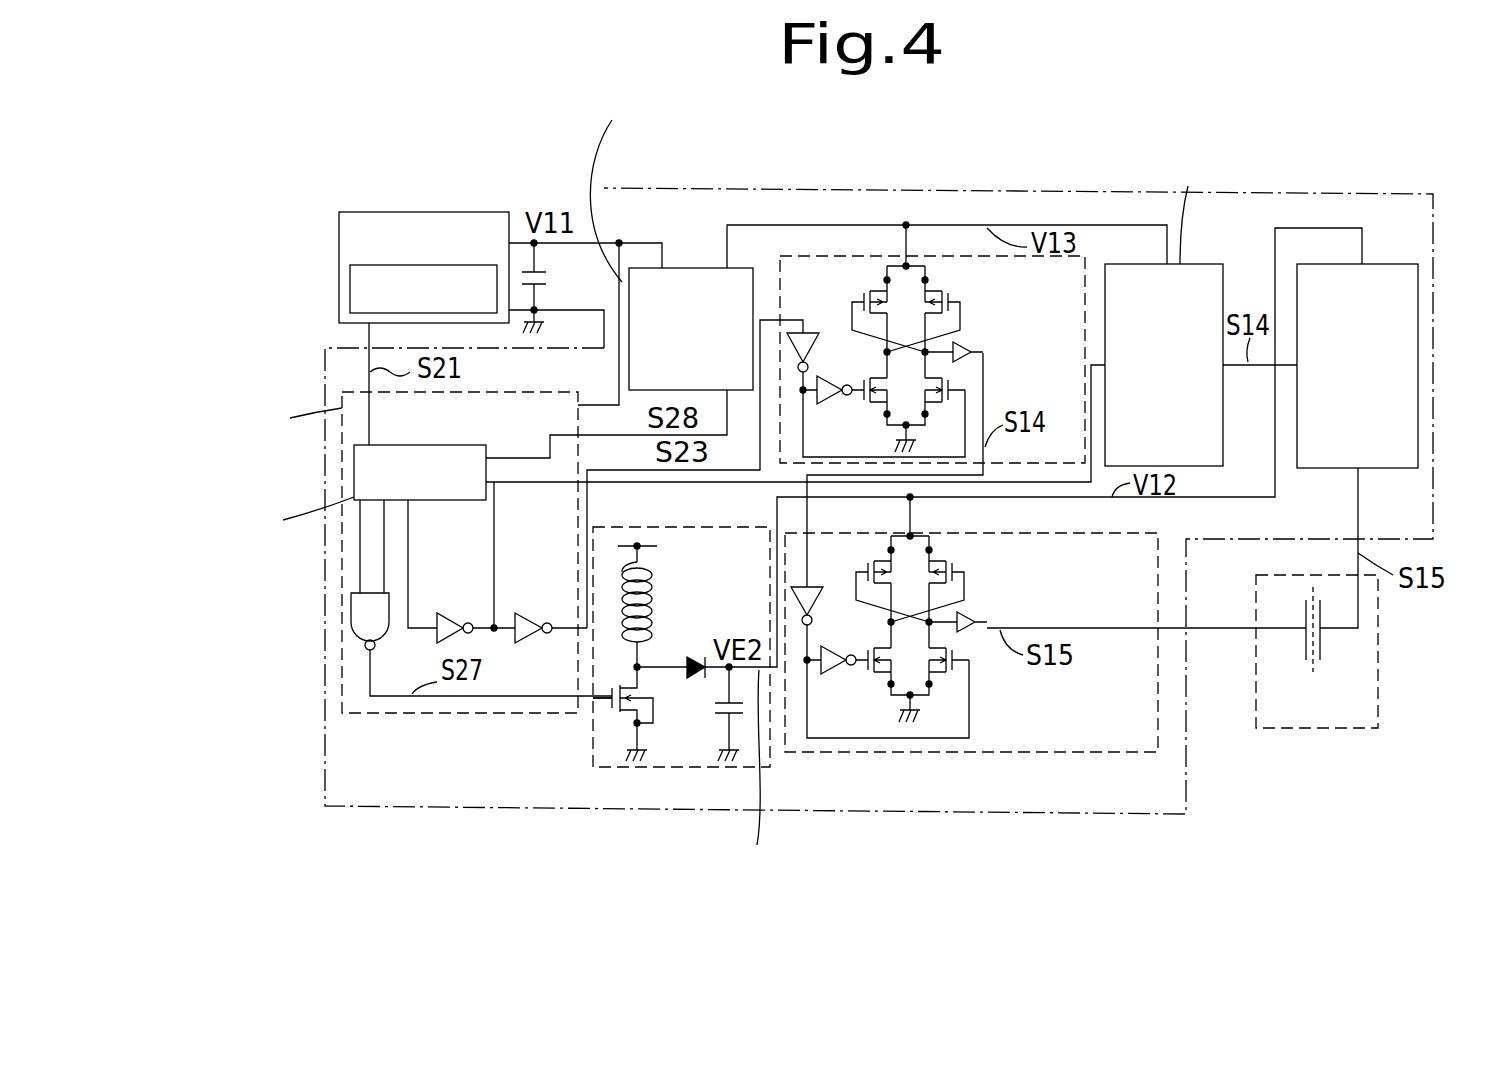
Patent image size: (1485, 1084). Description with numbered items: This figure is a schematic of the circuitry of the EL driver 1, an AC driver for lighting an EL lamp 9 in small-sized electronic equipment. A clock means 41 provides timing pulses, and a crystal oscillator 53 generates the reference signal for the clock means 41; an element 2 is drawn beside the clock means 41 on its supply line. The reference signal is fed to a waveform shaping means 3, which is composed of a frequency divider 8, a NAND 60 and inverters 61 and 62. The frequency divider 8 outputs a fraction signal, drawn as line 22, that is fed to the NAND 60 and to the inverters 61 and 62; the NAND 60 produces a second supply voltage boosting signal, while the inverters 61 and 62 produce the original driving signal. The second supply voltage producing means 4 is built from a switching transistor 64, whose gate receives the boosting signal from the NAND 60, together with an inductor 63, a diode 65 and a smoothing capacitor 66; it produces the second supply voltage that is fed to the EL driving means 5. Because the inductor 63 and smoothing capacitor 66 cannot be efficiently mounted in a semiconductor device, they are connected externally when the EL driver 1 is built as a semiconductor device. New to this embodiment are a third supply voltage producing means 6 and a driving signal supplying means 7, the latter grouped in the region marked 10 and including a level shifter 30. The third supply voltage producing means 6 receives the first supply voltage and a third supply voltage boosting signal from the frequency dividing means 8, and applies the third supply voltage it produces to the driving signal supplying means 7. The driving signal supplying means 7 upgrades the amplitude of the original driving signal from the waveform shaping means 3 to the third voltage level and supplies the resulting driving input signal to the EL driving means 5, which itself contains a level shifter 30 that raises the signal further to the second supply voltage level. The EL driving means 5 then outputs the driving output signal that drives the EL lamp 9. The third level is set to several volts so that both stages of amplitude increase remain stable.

The EL driver 1 is at (705, 822).
The capacitor 2 is at (541, 284).
The waveform shaping means 3 is at (342, 428).
The second supply voltage producing means 4 is at (702, 527).
The EL driving means 5 is at (1090, 758).
The third supply voltage producing means 6 is at (697, 268).
The driving signal supplying means 7 is at (778, 272).
The frequency divider 8 is at (354, 483).
The EL lamp 9 is at (1312, 730).
The driving signal supplying means 10 is at (987, 257).
The signal line 22 is at (410, 582).
The level shifter 30 is at (938, 292).
The clock means 41 is at (432, 212).
The crystal oscillator 53 is at (350, 286).
The NAND 60 is at (481, 644).
The inverter 61 is at (450, 618).
The inverter 62 is at (538, 609).
The inductor 63 is at (624, 618).
The switching transistor 64 is at (607, 722).
The diode 65 is at (698, 676).
The smoothing capacitor 66 is at (720, 714).